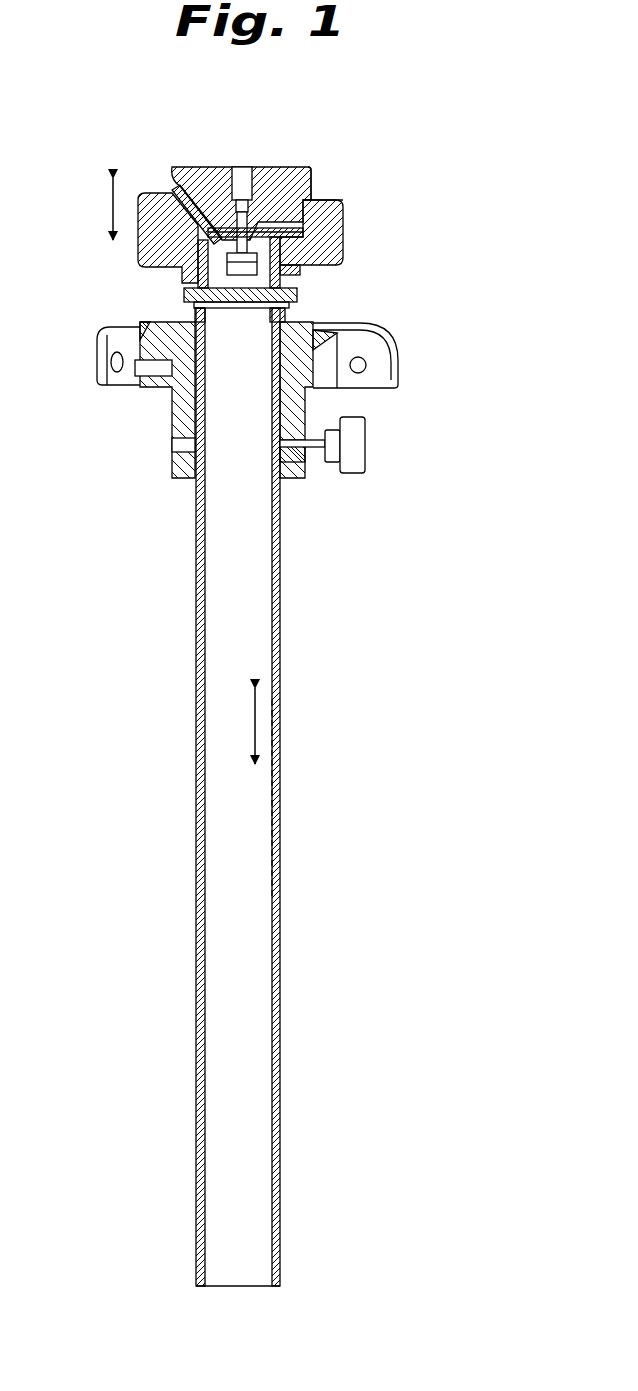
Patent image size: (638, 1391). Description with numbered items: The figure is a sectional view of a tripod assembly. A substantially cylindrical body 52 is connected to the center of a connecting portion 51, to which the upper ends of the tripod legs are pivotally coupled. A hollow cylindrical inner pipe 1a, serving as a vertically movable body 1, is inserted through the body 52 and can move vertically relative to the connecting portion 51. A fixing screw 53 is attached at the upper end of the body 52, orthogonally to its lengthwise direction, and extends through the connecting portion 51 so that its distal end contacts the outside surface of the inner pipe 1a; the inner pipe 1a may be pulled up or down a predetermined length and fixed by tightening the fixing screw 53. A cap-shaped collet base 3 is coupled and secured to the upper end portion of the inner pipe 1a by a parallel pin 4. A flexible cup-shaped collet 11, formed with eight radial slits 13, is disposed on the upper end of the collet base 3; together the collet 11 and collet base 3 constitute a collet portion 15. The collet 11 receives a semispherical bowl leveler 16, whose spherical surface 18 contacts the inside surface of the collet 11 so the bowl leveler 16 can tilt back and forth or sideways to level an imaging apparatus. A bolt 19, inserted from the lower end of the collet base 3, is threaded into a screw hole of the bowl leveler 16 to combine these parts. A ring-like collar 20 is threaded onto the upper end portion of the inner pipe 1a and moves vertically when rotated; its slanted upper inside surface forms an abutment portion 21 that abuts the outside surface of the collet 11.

The vertically movable body 1 is at (283, 778).
The inner pipe 1a is at (281, 828).
The collet base 3 is at (298, 272).
The parallel pin 4 is at (292, 295).
The collet 11 is at (337, 216).
The slits 13 is at (310, 198).
The collet portion 15 is at (312, 232).
The bowl leveler 16 is at (290, 175).
The spherical surface 18 is at (312, 180).
The bolt 19 is at (232, 265).
The collar 20 is at (137, 258).
The abutment portion 21 is at (185, 215).
The connecting portion 51 is at (393, 340).
The body 52 is at (178, 423).
The fixing screw 53 is at (358, 445).